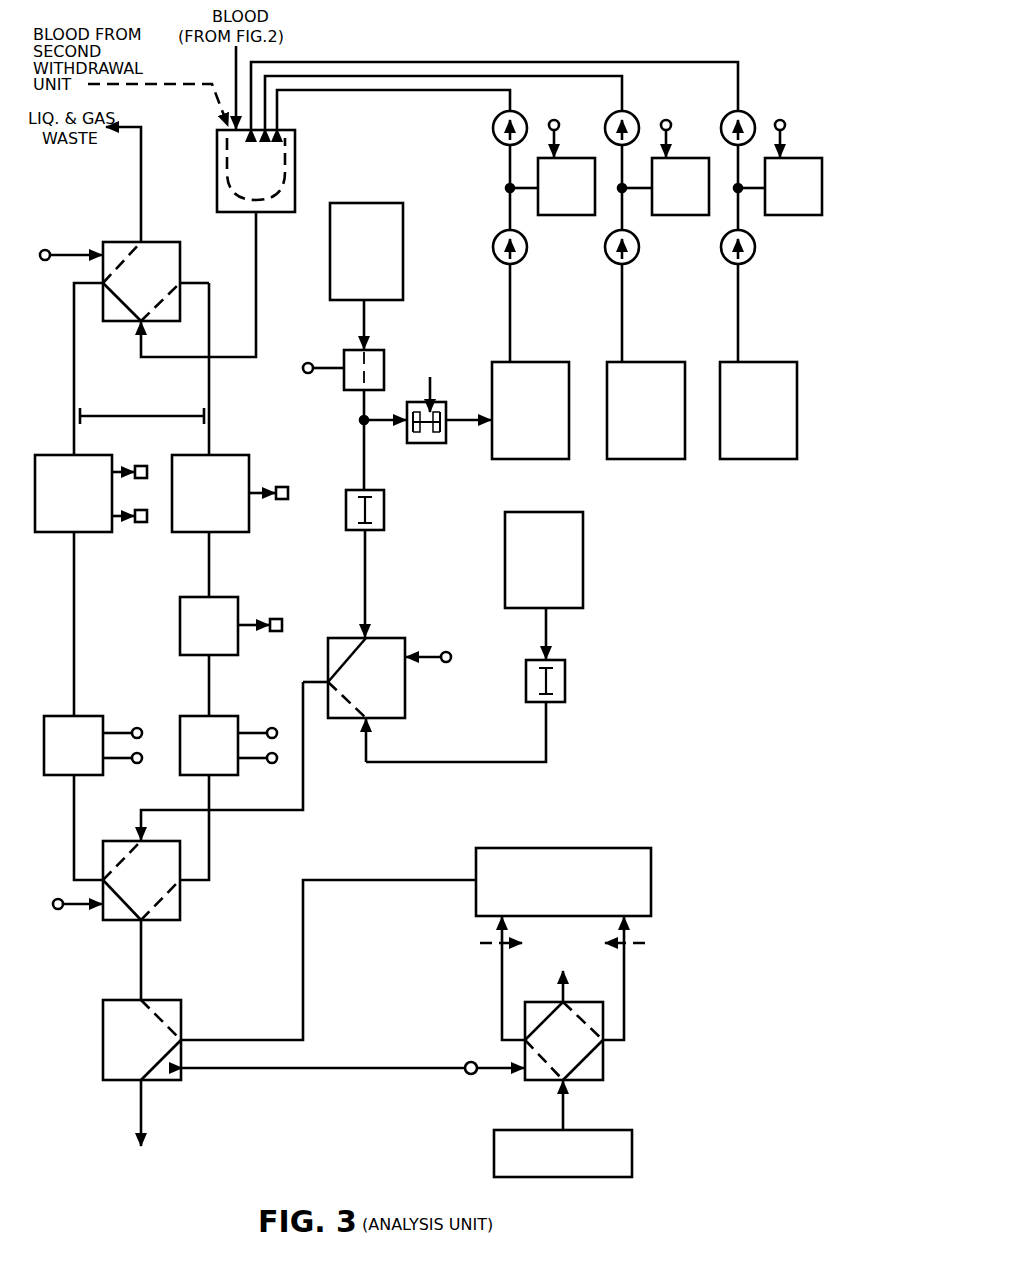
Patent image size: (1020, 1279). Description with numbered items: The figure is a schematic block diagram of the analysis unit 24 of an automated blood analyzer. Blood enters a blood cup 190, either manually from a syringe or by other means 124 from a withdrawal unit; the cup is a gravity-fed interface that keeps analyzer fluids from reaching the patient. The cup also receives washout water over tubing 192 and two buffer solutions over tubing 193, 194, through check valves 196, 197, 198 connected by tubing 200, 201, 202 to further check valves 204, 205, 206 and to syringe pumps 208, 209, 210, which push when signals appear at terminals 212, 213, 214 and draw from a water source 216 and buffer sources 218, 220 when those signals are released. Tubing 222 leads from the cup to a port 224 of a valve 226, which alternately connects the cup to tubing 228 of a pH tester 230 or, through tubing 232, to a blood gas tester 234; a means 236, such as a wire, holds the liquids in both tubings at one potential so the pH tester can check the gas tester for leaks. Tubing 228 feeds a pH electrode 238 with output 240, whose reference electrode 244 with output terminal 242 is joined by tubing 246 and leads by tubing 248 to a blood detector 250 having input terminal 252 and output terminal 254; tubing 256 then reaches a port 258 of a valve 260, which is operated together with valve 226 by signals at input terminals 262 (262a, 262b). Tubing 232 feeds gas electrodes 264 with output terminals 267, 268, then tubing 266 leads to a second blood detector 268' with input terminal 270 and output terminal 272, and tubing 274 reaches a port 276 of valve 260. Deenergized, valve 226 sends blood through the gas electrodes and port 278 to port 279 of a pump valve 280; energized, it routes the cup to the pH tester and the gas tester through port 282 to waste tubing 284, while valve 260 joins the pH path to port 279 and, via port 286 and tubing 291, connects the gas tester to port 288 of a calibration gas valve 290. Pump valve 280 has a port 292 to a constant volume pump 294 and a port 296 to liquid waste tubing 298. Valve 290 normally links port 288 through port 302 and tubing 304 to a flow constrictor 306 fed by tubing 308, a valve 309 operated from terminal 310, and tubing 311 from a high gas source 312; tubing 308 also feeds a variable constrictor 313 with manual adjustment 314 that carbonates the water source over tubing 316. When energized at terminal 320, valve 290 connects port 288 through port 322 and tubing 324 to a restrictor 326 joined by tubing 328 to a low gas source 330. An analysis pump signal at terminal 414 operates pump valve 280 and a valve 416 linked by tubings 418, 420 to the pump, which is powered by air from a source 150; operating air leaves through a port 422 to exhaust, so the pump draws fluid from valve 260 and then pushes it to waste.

The analysis unit 24 is at (684, 676).
The blood supply means 124 is at (233, 50).
The air source 150 is at (633, 1155).
The blood cup 190 is at (296, 165).
The tubing 192 is at (400, 90).
The tubing 193 is at (418, 76).
The tubing 194 is at (350, 62).
The check valve 196 is at (522, 118).
The check valve 197 is at (635, 118).
The check valve 198 is at (749, 118).
The tubing 200 is at (508, 186).
The tubing 201 is at (620, 186).
The tubing 202 is at (736, 186).
The check valve 204 is at (527, 259).
The check valve 205 is at (639, 259).
The check valve 206 is at (755, 259).
The syringe pump 208 is at (553, 216).
The syringe pump 209 is at (660, 216).
The syringe pump 210 is at (770, 216).
The terminal 212 is at (559, 124).
The terminal 213 is at (671, 124).
The terminal 214 is at (785, 124).
The water source 216 is at (535, 460).
The buffer one source 218 is at (640, 460).
The buffer two source 220 is at (752, 460).
The tubing 222 is at (258, 268).
The port 224 is at (137, 337).
The valve 226 is at (184, 262).
The tubing 228 is at (213, 328).
The pH tester 230 is at (190, 595).
The tubing 232 is at (74, 356).
The blood gas tester 234 is at (82, 540).
The equipotential means 236 is at (132, 416).
The pH electrode 238 is at (226, 455).
The output 240 is at (280, 488).
The output terminal 242 is at (278, 618).
The reference electrode 244 is at (178, 648).
The tubing 246 is at (212, 574).
The tubing 248 is at (211, 678).
The blood detector 250 is at (212, 788).
The input terminal 252 is at (270, 763).
The output terminal 254 is at (280, 710).
The tubing 256 is at (212, 836).
The port 258 is at (182, 884).
The valve 260 is at (182, 914).
The input terminals 262 is at (76, 274).
The input terminal 262a is at (40, 252).
The input terminal 262b is at (56, 910).
The gas electrodes 264 is at (88, 455).
The tubing 266 is at (72, 582).
The output terminal 267 is at (150, 470).
The output terminal 268 is at (135, 503).
The blood detector 268' is at (62, 730).
The input terminal 270 is at (136, 764).
The output terminal 272 is at (135, 728).
The tubing 274 is at (72, 820).
The port 276 is at (100, 878).
The port 278 is at (143, 926).
The port 279 is at (143, 1000).
The pump valve 280 is at (103, 1036).
The port 282 is at (143, 246).
The waste tubing 284 is at (141, 178).
The port 286 is at (146, 846).
The port 288 is at (322, 682).
The calibration gas valve 290 is at (406, 712).
The tubing 291 is at (305, 764).
The port 292 is at (184, 1040).
The constant volume pump 294 is at (654, 862).
The port 296 is at (144, 1084).
The waste tubing 298 is at (138, 1106).
The port 302 is at (376, 650).
The tubing 304 is at (368, 590).
The flow constrictor 306 is at (386, 512).
The tubing 308 is at (360, 420).
The valve 309 is at (386, 372).
The terminal 310 is at (306, 372).
The tubing 311 is at (367, 318).
The high PO2 and PCO2 source 312 is at (404, 262).
The variable flow constrictor 313 is at (415, 445).
The manual adjustment 314 is at (432, 378).
The tubing 316 is at (460, 430).
The input terminal 320 is at (443, 664).
The port 322 is at (370, 728).
The tubing 324 is at (448, 762).
The flow restrictor 326 is at (567, 680).
The tubing 328 is at (549, 630).
The low PO2 and PCO2 source 330 is at (584, 585).
The terminal 414 is at (468, 1074).
The valve 416 is at (606, 1064).
The tubing 418 is at (626, 972).
The tubing 420 is at (500, 966).
The exhaust port 422 is at (569, 1004).